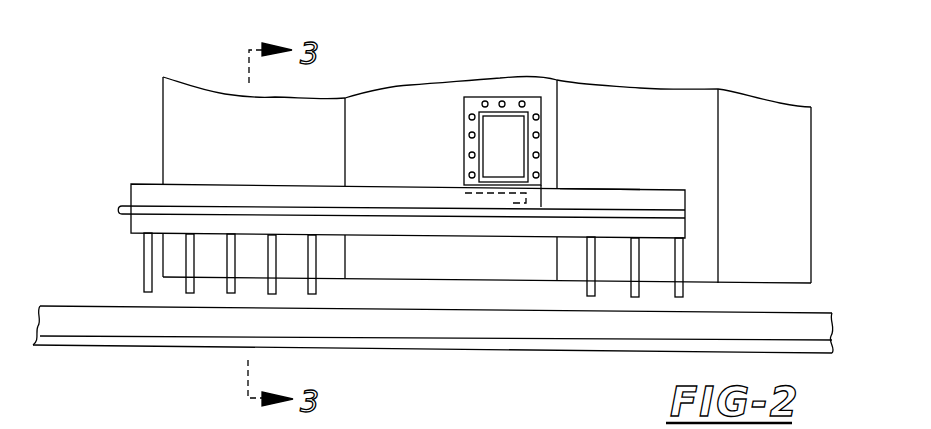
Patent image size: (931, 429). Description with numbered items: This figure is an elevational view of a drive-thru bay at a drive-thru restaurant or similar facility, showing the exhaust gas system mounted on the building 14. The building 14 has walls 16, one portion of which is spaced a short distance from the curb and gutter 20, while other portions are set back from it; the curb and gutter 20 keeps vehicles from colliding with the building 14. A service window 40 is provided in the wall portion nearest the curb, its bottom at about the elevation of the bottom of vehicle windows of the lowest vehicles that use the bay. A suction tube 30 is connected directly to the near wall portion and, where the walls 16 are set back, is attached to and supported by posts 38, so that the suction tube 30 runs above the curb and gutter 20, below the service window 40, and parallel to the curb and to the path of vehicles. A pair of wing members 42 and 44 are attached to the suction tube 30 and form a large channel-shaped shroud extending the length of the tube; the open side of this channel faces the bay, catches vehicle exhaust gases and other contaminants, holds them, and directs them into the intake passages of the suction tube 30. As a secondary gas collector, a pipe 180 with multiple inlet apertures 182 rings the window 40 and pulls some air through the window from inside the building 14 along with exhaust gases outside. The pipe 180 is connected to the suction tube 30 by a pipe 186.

The building 14 is at (138, 151).
The walls 16 is at (741, 118).
The curb and gutter 20 is at (113, 325).
The suction tube 30 is at (651, 212).
The posts 38 is at (228, 268).
The service window 40 is at (488, 135).
The wing member 42 is at (685, 228).
The wing member 44 is at (597, 190).
The pipe 180 is at (522, 97).
The inlet apertures 182 is at (464, 118).
The pipe 186 is at (512, 203).